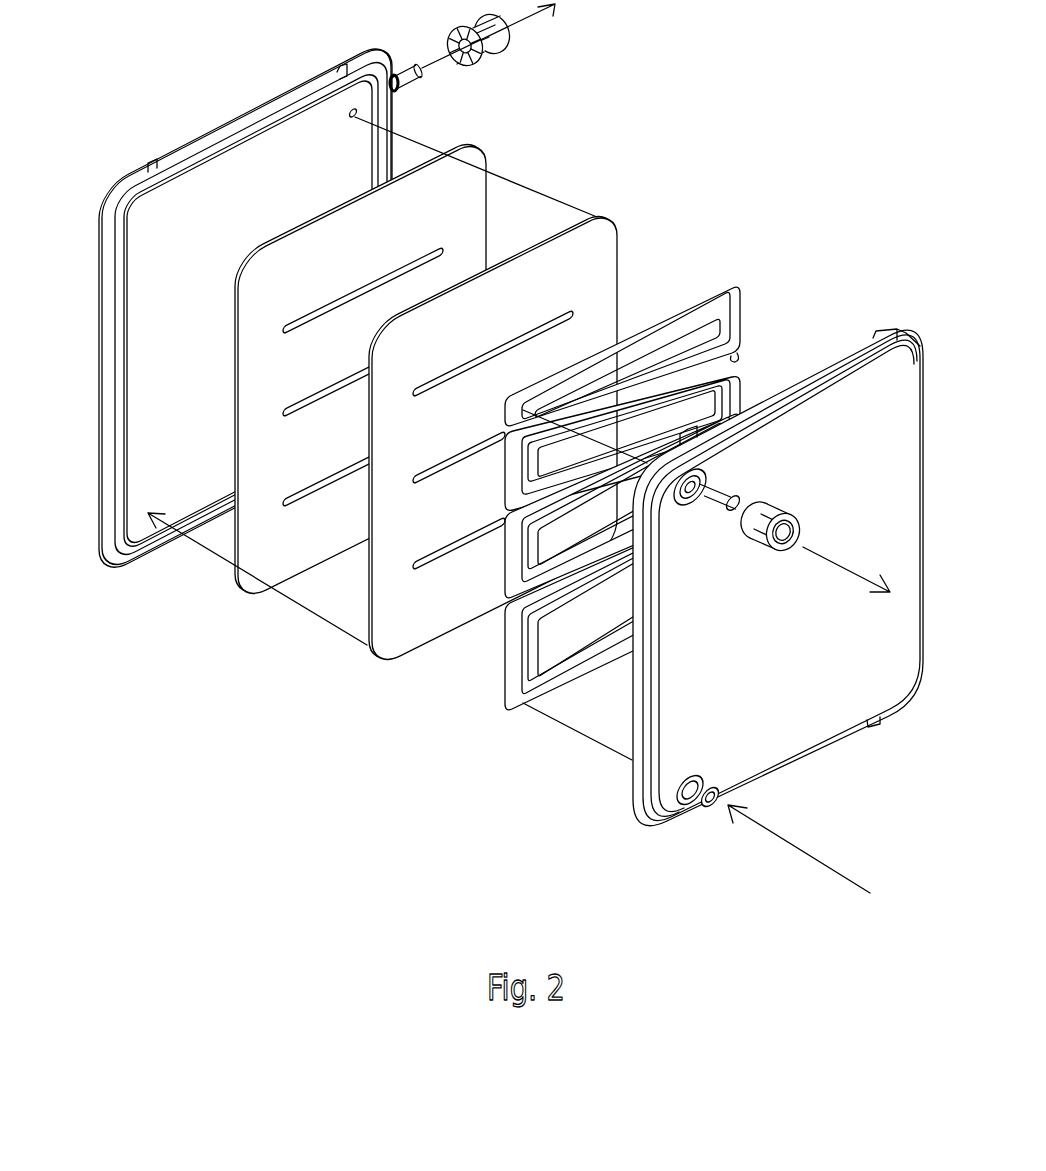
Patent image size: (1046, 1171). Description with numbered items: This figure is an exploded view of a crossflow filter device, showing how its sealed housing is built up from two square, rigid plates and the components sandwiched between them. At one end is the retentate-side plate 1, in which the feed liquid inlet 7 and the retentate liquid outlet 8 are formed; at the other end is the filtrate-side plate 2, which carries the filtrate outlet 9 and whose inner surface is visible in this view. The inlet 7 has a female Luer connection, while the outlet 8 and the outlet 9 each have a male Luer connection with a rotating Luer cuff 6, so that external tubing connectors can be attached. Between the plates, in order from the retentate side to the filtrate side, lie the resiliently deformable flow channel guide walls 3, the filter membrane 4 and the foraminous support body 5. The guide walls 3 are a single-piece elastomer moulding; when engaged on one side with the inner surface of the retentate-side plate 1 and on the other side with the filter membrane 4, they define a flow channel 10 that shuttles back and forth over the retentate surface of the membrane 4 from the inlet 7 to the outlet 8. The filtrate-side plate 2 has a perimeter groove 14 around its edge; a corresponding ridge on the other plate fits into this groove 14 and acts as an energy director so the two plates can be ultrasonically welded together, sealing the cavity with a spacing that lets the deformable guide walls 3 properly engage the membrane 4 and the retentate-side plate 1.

The retentate-side plate 1 is at (897, 333).
The filtrate-side plate 2 is at (226, 304).
The flow channel guide walls 3 is at (688, 481).
The filter membrane 4 is at (610, 215).
The foraminous support body 5 is at (475, 147).
The rotating Luer cuff 6 is at (498, 57).
The inlet 7 is at (693, 795).
The outlet 8 is at (712, 508).
The outlet 9 is at (407, 78).
The flow channel 10 is at (730, 321).
The perimeter groove 14 is at (120, 475).